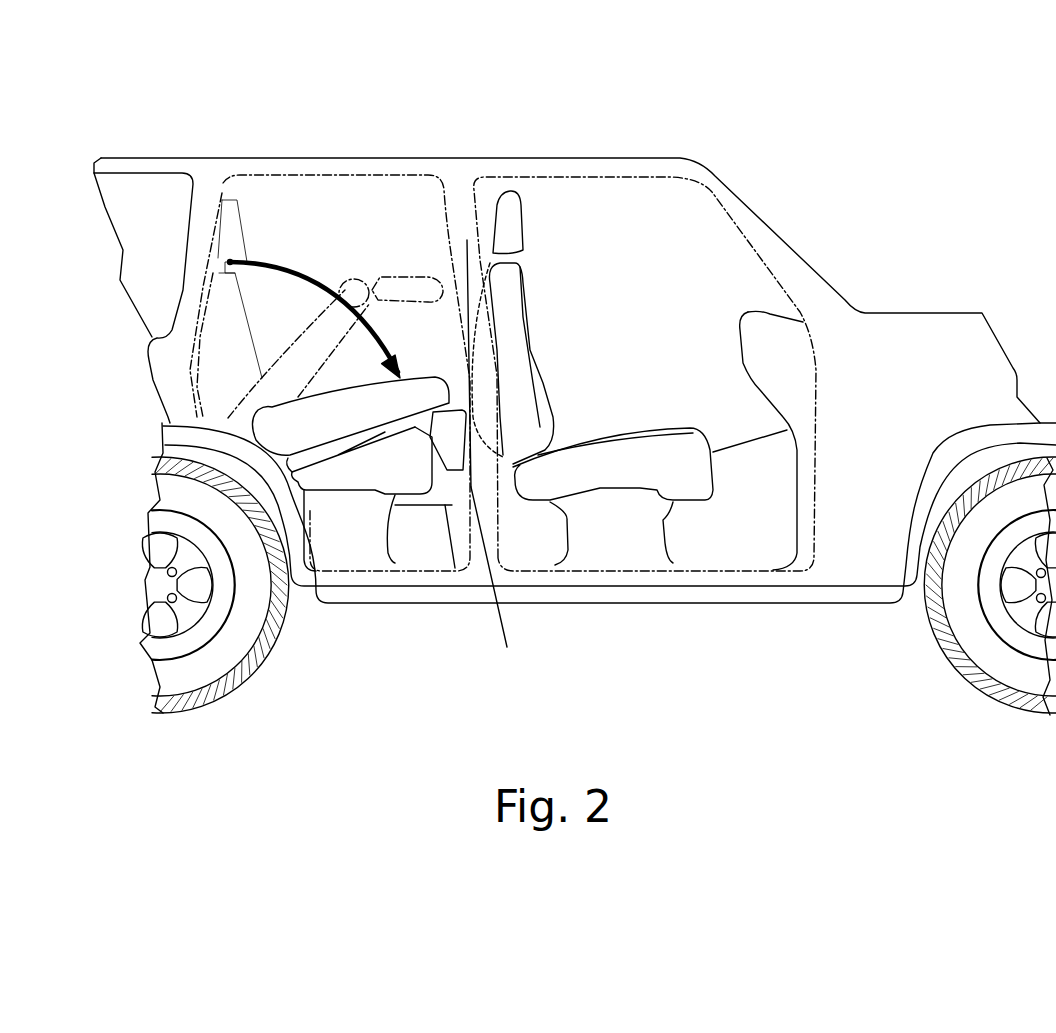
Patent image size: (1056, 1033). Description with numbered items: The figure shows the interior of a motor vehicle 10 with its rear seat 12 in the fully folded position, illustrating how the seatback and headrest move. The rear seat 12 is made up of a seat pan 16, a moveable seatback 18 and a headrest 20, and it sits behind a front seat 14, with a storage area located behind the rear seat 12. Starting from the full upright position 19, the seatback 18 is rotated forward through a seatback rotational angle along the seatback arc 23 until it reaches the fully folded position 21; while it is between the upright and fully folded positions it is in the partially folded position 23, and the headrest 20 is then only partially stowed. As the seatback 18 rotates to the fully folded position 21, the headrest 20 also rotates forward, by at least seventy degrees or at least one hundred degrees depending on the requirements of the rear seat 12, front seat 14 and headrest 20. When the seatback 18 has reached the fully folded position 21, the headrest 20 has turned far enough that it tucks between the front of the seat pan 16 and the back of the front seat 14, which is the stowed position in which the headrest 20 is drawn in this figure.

The motor vehicle 10 is at (836, 274).
The rear seat 12 is at (340, 461).
The front seat 14 is at (540, 323).
The seat pan 16 is at (422, 405).
The seatback 18 is at (311, 428).
The full upright position 19 is at (240, 215).
The headrest 20 is at (495, 581).
The fully folded position 21 is at (430, 365).
The partially folded position / seatback arc 23 is at (285, 270).